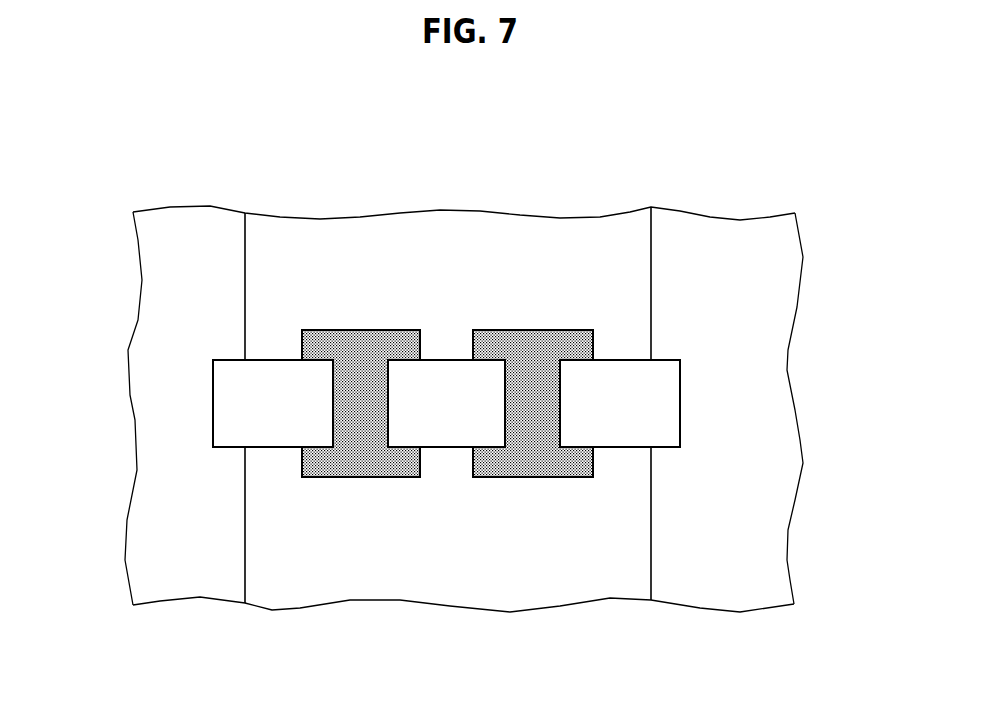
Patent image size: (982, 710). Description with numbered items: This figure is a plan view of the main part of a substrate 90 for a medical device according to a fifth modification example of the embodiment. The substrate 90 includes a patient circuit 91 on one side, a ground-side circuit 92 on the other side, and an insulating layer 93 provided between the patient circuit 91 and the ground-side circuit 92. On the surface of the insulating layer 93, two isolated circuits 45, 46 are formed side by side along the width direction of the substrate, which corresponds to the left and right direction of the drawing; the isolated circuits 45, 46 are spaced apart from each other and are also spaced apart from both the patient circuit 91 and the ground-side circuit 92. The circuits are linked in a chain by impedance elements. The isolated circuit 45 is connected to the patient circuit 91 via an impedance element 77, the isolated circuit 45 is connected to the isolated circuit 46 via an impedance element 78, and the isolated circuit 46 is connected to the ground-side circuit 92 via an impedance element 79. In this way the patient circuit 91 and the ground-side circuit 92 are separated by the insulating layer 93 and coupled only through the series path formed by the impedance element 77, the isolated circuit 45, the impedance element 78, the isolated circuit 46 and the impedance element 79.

The substrate 90 is at (459, 357).
The patient circuit 91 is at (163, 395).
The ground-side circuit 92 is at (762, 408).
The insulating layer 93 is at (440, 228).
The isolated circuit 45 is at (357, 345).
The isolated circuit 46 is at (538, 345).
The impedance element 77 is at (290, 449).
The impedance element 78 is at (447, 449).
The impedance element 79 is at (622, 449).